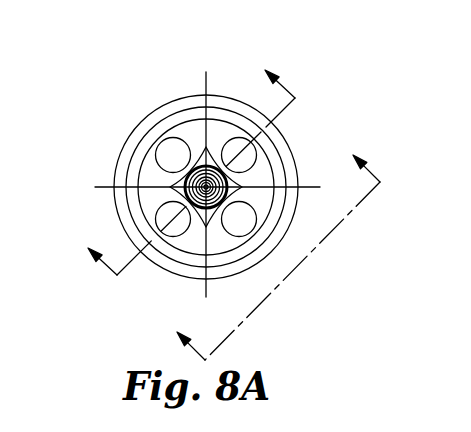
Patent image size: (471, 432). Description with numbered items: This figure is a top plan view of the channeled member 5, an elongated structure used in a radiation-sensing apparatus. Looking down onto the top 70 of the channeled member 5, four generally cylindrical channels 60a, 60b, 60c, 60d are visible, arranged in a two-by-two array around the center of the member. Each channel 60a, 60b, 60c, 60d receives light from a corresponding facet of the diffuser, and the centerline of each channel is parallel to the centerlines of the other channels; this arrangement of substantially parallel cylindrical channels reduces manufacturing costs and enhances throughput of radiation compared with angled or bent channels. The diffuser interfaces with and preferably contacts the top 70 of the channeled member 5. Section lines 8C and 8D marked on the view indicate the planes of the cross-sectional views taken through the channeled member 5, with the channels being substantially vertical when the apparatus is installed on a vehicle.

The channeled member 5 is at (122, 134).
The top 70 is at (200, 168).
The channel 60a is at (162, 166).
The channel 60b is at (182, 235).
The channel 60c is at (242, 217).
The channel 60d is at (224, 141).
The section line 8C- 8C is at (171, 156).
The section line 8D- 8D is at (258, 242).